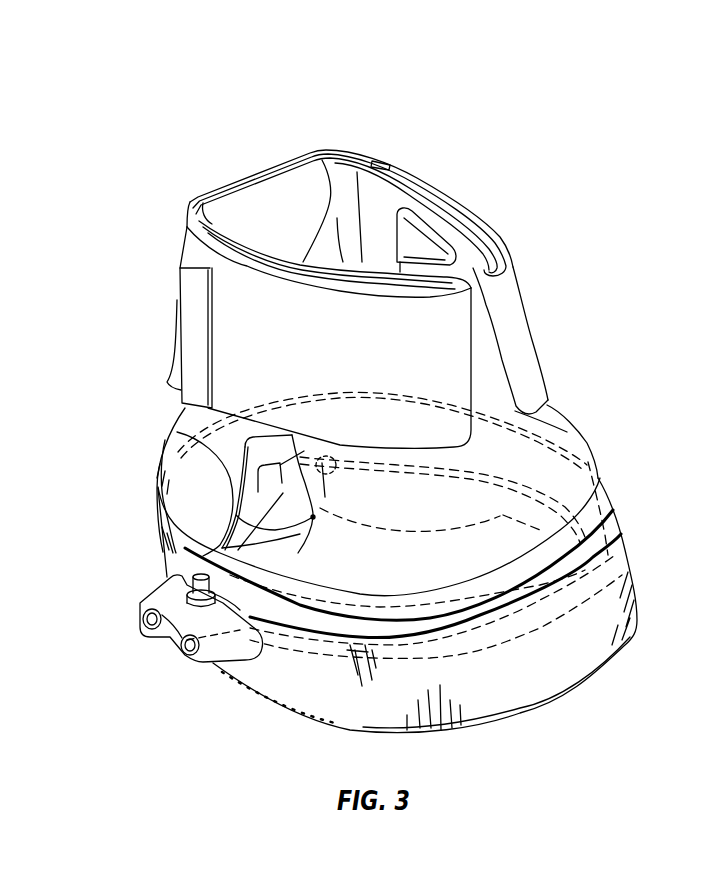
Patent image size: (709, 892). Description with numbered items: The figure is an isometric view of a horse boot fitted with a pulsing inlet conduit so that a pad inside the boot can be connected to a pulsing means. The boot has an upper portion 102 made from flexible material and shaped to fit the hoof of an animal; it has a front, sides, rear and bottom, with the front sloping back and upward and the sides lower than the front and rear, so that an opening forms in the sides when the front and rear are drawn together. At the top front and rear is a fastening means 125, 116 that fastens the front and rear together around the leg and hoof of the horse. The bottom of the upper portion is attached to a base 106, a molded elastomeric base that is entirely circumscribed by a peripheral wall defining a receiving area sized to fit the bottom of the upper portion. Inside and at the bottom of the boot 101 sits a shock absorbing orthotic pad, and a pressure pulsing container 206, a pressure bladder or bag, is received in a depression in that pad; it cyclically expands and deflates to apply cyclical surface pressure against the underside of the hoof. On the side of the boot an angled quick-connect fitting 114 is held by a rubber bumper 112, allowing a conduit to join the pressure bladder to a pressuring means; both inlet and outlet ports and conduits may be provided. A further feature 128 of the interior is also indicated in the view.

The bottom of the boot 101 is at (177, 432).
The upper portion 102 is at (580, 427).
The base 106 is at (553, 700).
The rubber bumper 112 is at (157, 637).
The quick-connect fitting 114 is at (167, 578).
The fastening means 116 is at (193, 253).
The fastening means 125 is at (445, 333).
The inner surface 128 is at (352, 514).
The pressure pulsing container 206 is at (283, 493).